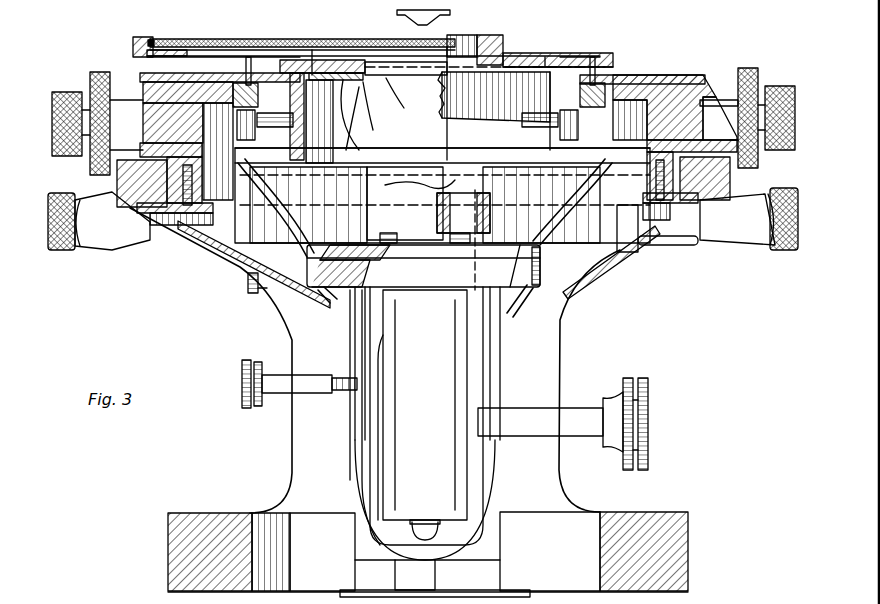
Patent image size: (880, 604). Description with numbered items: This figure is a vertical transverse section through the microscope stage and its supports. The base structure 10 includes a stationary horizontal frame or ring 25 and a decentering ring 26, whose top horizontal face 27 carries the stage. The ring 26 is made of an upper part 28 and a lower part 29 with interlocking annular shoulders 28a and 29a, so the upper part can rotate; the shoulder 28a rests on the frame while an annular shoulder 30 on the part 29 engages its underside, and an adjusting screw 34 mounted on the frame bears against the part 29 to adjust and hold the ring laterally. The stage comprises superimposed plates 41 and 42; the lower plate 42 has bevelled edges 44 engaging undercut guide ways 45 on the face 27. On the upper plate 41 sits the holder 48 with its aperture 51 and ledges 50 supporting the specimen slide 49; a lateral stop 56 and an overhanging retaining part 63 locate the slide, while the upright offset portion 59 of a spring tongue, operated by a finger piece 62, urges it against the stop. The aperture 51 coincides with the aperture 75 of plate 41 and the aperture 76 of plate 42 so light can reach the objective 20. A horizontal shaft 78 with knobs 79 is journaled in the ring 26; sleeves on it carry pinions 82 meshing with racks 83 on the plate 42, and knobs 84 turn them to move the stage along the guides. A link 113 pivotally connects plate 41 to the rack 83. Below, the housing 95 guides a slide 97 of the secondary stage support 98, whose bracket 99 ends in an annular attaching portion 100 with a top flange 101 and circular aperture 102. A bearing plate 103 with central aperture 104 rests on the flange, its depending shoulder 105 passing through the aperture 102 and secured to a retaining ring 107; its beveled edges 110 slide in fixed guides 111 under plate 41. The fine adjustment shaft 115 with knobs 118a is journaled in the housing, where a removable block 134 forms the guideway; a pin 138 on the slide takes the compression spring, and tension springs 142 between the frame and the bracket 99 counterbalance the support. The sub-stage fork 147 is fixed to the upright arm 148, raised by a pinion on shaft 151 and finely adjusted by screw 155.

The base structure 10 is at (657, 238).
The objective 20 is at (418, 20).
The horizontal frame or ring 25 is at (117, 185).
The decentering ring 26 is at (690, 95).
The top horizontal face 27 is at (712, 78).
The upper part of decentering ring 28 is at (143, 88).
The annular shoulder 28a is at (700, 165).
The lower part of decentering ring 29 is at (142, 238).
The annular shoulder 29a is at (738, 145).
The annular shoulder 30 is at (715, 232).
The adjusting screw 34 is at (62, 250).
The upper stage plate 41 is at (530, 54).
The lower stage plate 42 is at (632, 64).
The bevelled edges 44 is at (280, 73).
The undercut guide ways 45 is at (230, 74).
The holder 48 is at (150, 40).
The specimen slide 49 is at (190, 50).
The horizontal ledges 50 is at (147, 57).
The aperture of holder 51 is at (490, 36).
The lateral stop 56 is at (133, 43).
The upright offset portion 59 is at (462, 36).
The finger piece 62 is at (512, 54).
The overhanging retaining part 63 is at (152, 40).
The aperture of upper stage plate 75 is at (380, 60).
The aperture of lower stage plate 76 is at (548, 95).
The horizontal shaft 78 is at (90, 82).
The operating knobs 79 is at (782, 86).
The pinion 82 is at (240, 130).
The rack 83 is at (258, 84).
The operating knobs 84 is at (758, 75).
The housing 95 is at (350, 434).
The slide 97 is at (455, 565).
The secondary stage support 98 is at (540, 253).
The bracket 99 is at (600, 205).
The annular attaching portion 100 is at (518, 105).
The top flange 101 is at (312, 50).
The circular aperture 102 is at (367, 121).
The bearing plate 103 is at (546, 56).
The central circular aperture 104 is at (406, 76).
The depending annular shoulder 105 is at (382, 114).
The retaining ring 107 is at (368, 118).
The beveled edges 110 is at (575, 54).
The fixed guides 111 is at (248, 58).
The link 113 is at (268, 115).
The transverse shaft 115 is at (553, 113).
The operating knob 118a is at (248, 285).
The removable block 134 is at (362, 466).
The pin 138 is at (440, 530).
The tension springs 142 is at (437, 215).
The horizontal fork 147 is at (423, 266).
The upright arm 148 is at (422, 405).
The horizontal shaft 151 is at (563, 424).
The fine adjusting screw 155 is at (330, 376).